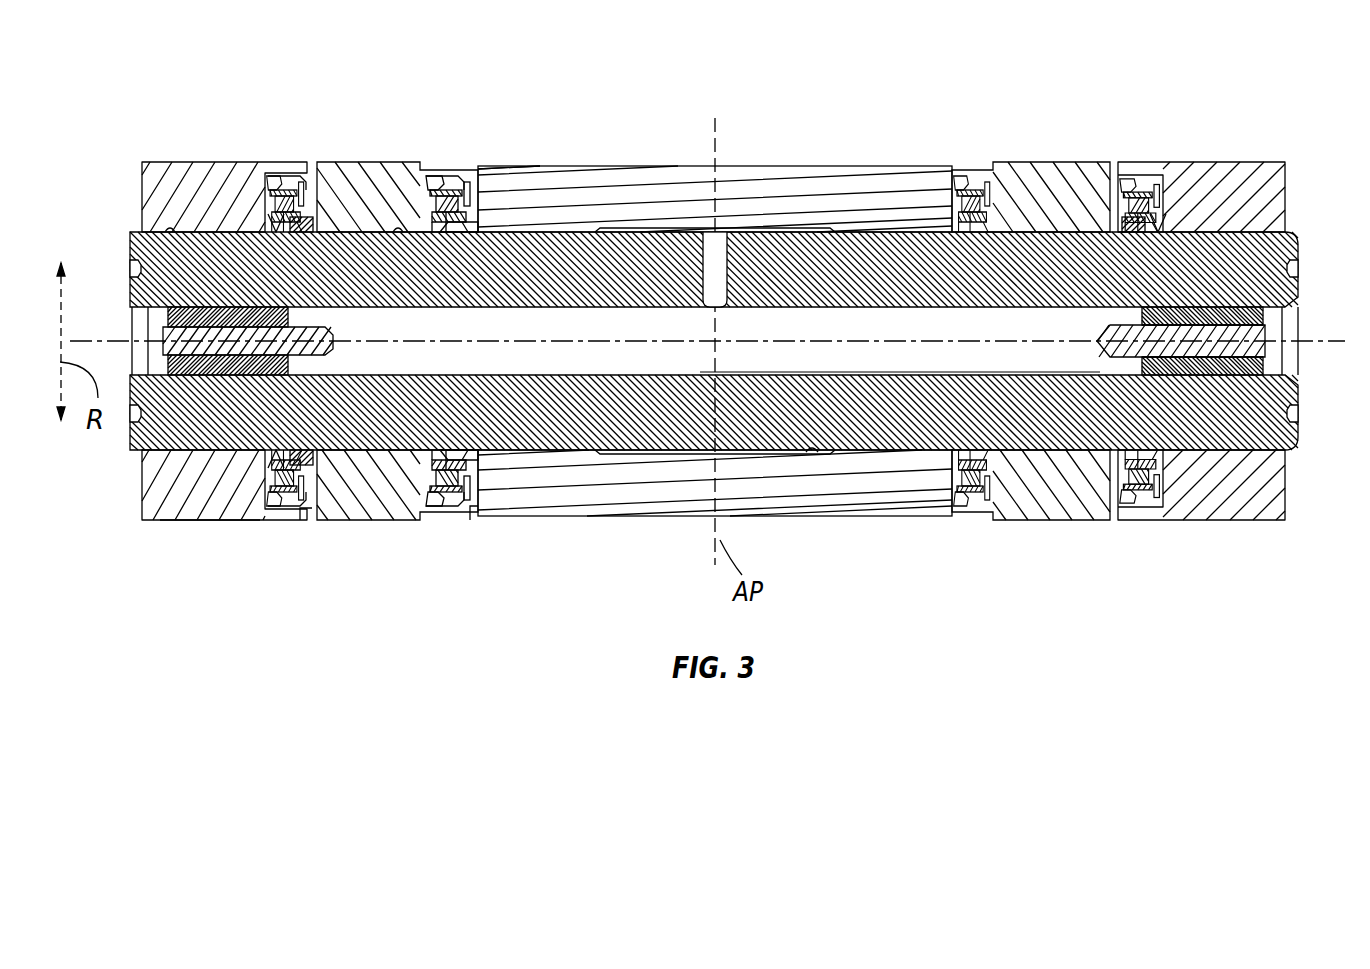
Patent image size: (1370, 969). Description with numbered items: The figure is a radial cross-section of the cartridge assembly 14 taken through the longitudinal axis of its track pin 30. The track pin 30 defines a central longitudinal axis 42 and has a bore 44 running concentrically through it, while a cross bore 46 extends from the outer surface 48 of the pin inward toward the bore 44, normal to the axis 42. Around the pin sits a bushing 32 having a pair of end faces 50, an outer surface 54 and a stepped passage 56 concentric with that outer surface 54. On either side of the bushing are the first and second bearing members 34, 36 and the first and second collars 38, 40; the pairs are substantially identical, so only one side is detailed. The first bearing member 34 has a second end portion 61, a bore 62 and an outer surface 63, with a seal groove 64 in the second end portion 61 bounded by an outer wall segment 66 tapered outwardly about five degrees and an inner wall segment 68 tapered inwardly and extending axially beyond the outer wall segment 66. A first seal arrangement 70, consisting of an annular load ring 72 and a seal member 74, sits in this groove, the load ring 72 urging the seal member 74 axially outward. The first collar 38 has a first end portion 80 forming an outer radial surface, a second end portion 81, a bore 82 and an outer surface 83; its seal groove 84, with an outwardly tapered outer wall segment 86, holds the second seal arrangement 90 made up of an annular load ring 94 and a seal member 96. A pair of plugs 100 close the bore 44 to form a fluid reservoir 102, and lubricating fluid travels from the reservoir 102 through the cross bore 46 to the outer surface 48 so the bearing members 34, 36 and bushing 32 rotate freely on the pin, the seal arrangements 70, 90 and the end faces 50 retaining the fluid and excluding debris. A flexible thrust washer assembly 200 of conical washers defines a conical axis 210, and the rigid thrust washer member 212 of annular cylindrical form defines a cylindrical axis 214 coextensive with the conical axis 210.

The cartridge assembly 14 is at (1236, 113).
The track pin 30 is at (128, 262).
The bushing 32 is at (880, 165).
The first bearing member 34 is at (385, 165).
The second bearing member 36 is at (1075, 165).
The first collar 38 is at (168, 522).
The second collar 40 is at (1232, 522).
The central longitudinal axis 42 is at (125, 342).
The bore 44 is at (940, 370).
The cross bore 46 is at (712, 262).
The outer surface 48 is at (553, 230).
The end faces 50 is at (470, 165).
The outer surface 54 is at (700, 522).
The stepped passage 56 is at (810, 520).
The second end portion 61 is at (480, 506).
The bore 62 is at (397, 232).
The outer surface 63 is at (396, 522).
The seal groove 64 is at (438, 195).
The outer wall segment 66 is at (458, 178).
The inner wall segment 68 is at (442, 226).
The first seal arrangement 70 is at (442, 506).
The annular load ring 72 is at (422, 480).
The seal member 74 is at (472, 490).
The first end portion 80 is at (160, 172).
The second end portion 81 is at (310, 520).
The bore 82 is at (170, 232).
The outer surface 83 is at (212, 522).
The seal groove 84 is at (272, 200).
The outer wall segment 86 is at (303, 176).
The second seal arrangement 90 is at (297, 512).
The annular load ring 94 is at (252, 498).
The seal member 96 is at (318, 470).
The plugs 100 is at (170, 320).
The fluid reservoir 102 is at (1078, 360).
The flexible thrust washer assembly 200 is at (299, 236).
The conical axis 210 is at (1229, 299).
The rigid thrust washer member 212 is at (300, 220).
The cylindrical axis 214 is at (1298, 342).